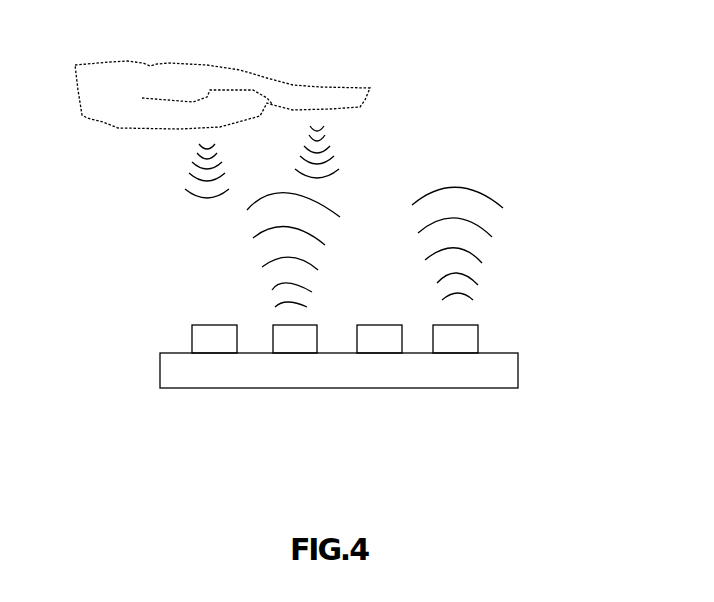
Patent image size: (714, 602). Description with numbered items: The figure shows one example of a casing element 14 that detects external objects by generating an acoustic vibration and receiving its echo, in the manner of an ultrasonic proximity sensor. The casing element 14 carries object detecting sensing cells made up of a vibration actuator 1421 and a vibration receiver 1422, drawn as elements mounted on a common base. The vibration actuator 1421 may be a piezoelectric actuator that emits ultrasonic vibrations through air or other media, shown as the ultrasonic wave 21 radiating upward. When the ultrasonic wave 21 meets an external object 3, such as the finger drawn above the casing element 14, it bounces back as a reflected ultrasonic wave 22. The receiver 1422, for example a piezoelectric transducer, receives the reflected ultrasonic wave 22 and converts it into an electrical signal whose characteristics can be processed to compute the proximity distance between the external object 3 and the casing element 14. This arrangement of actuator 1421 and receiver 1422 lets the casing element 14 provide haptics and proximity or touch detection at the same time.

The external object 3 is at (187, 77).
The ultrasonic wave 21 is at (500, 187).
The reflected ultrasonic wave 22 is at (175, 228).
The casing element 14 is at (342, 395).
The vibration actuator 1421 is at (473, 328).
The vibration receiver 1422 is at (376, 343).